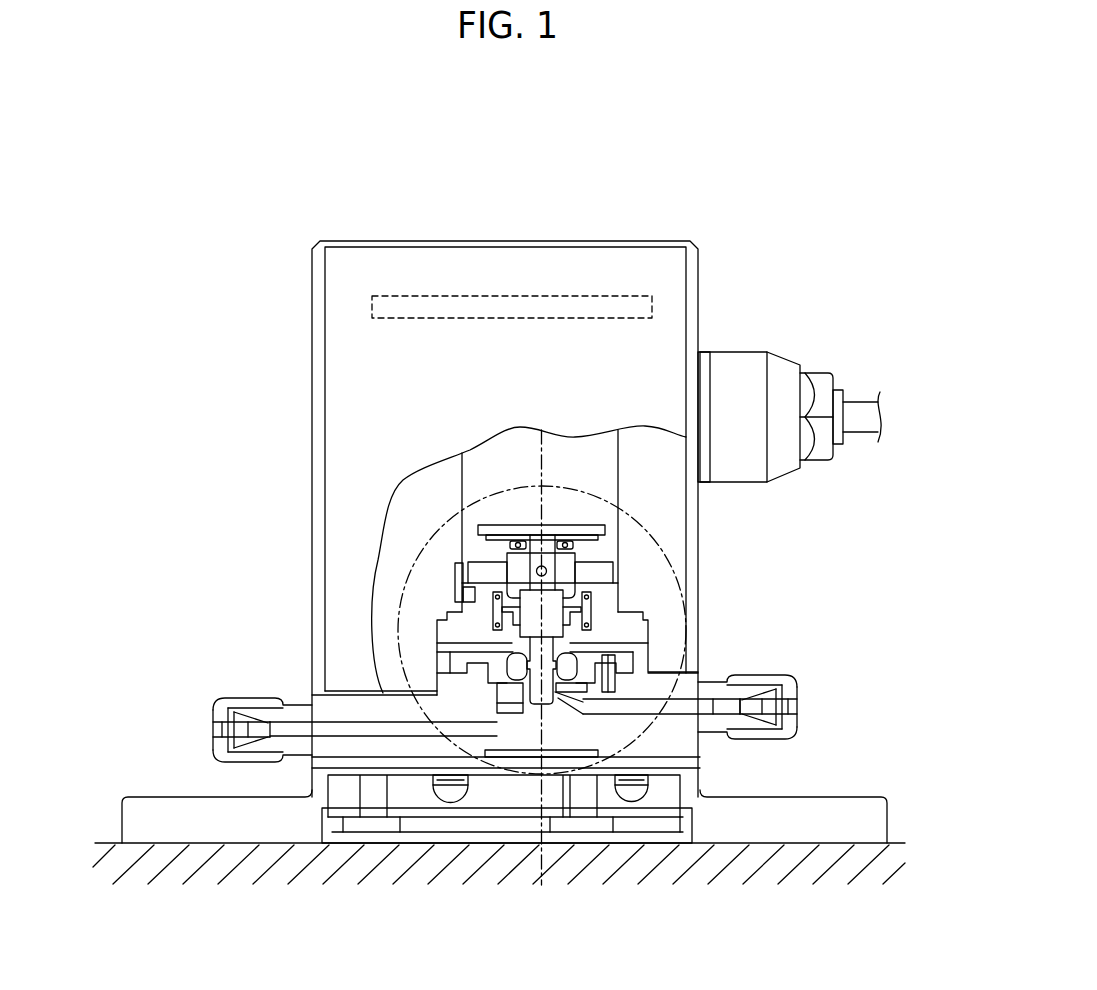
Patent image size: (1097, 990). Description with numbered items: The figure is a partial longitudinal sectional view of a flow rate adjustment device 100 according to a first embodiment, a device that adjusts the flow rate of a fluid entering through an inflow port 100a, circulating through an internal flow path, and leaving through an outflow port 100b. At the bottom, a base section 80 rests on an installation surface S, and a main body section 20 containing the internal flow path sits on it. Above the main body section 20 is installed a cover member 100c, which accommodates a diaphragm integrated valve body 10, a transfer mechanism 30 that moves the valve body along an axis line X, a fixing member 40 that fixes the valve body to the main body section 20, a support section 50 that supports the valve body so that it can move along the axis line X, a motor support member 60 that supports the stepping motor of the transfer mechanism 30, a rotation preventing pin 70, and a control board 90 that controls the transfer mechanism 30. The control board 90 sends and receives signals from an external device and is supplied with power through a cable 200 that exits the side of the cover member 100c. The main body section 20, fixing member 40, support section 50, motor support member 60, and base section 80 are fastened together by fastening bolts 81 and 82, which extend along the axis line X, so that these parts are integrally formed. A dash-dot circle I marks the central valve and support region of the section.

The flow rate adjustment device 100 is at (712, 174).
The inflow port 100a is at (765, 676).
The outflow port 100b is at (247, 700).
The cover member 100c is at (396, 240).
The diaphragm integrated valve body 10 is at (548, 682).
The main body section 20 is at (700, 756).
The transfer mechanism 30 is at (499, 550).
The fixing member 40 is at (648, 662).
The support section 50 is at (648, 627).
The motor support member 60 is at (619, 550).
The rotation preventing pin 70 is at (617, 686).
The base section 80 is at (858, 797).
The fastening bolt 81 is at (443, 802).
The fastening bolt 82 is at (645, 802).
The control board 90 is at (592, 296).
The cable 200 is at (857, 402).
The installation surface S is at (826, 843).
The detail region I is at (458, 512).
The axis line X is at (541, 462).